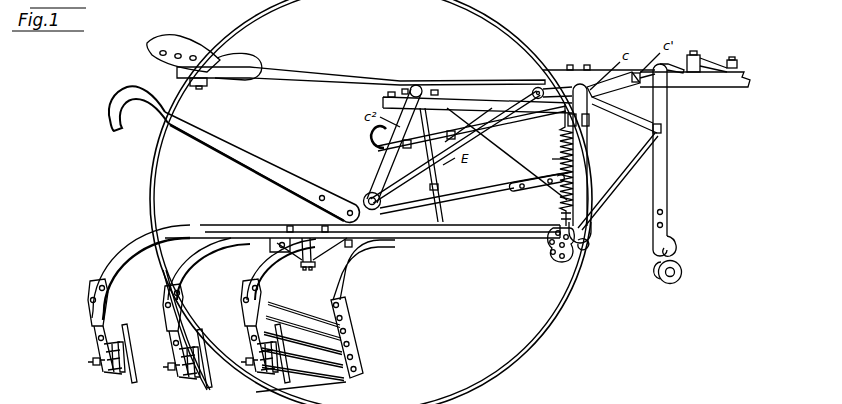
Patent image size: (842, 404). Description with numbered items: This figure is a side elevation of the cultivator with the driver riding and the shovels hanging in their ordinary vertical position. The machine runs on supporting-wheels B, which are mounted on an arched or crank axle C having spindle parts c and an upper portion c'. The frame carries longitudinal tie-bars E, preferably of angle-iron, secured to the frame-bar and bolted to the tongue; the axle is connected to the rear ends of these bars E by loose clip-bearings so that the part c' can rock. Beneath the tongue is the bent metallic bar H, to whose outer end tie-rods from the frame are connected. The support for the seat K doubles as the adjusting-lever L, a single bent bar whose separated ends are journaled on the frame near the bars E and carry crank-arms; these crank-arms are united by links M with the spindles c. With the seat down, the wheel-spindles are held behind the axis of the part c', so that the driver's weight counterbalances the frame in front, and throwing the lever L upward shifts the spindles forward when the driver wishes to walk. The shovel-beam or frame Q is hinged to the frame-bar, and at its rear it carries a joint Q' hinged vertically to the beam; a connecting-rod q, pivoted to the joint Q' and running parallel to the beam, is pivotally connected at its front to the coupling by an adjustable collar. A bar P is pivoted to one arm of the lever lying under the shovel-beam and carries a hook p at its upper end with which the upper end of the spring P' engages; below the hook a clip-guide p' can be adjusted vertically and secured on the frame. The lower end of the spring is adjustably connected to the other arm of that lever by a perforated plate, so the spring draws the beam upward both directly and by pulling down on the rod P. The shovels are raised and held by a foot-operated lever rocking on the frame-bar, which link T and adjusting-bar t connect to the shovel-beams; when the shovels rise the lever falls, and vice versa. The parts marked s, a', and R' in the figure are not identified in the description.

The seat K is at (196, 34).
The seat-support or adjusting-lever L is at (352, 80).
The bar P is at (334, 162).
The supporting-wheels B is at (576, 281).
The spindle parts c is at (362, 195).
The upper portion of axle c' is at (402, 126).
The links M is at (430, 181).
The longitudinal tie-bars E is at (464, 98).
The link T is at (480, 214).
The adjusting-bar t is at (536, 192).
The spring s is at (553, 115).
The hook p is at (554, 149).
The spring P' is at (549, 162).
The vertical rod a' is at (592, 163).
The clip-guide p' is at (590, 124).
The arched or crank axle C is at (617, 190).
The bar H is at (695, 79).
The joint Q' is at (311, 237).
The beam or frame Q is at (394, 305).
The connecting-rod q is at (504, 233).
The curved beam and shovel R' is at (169, 307).